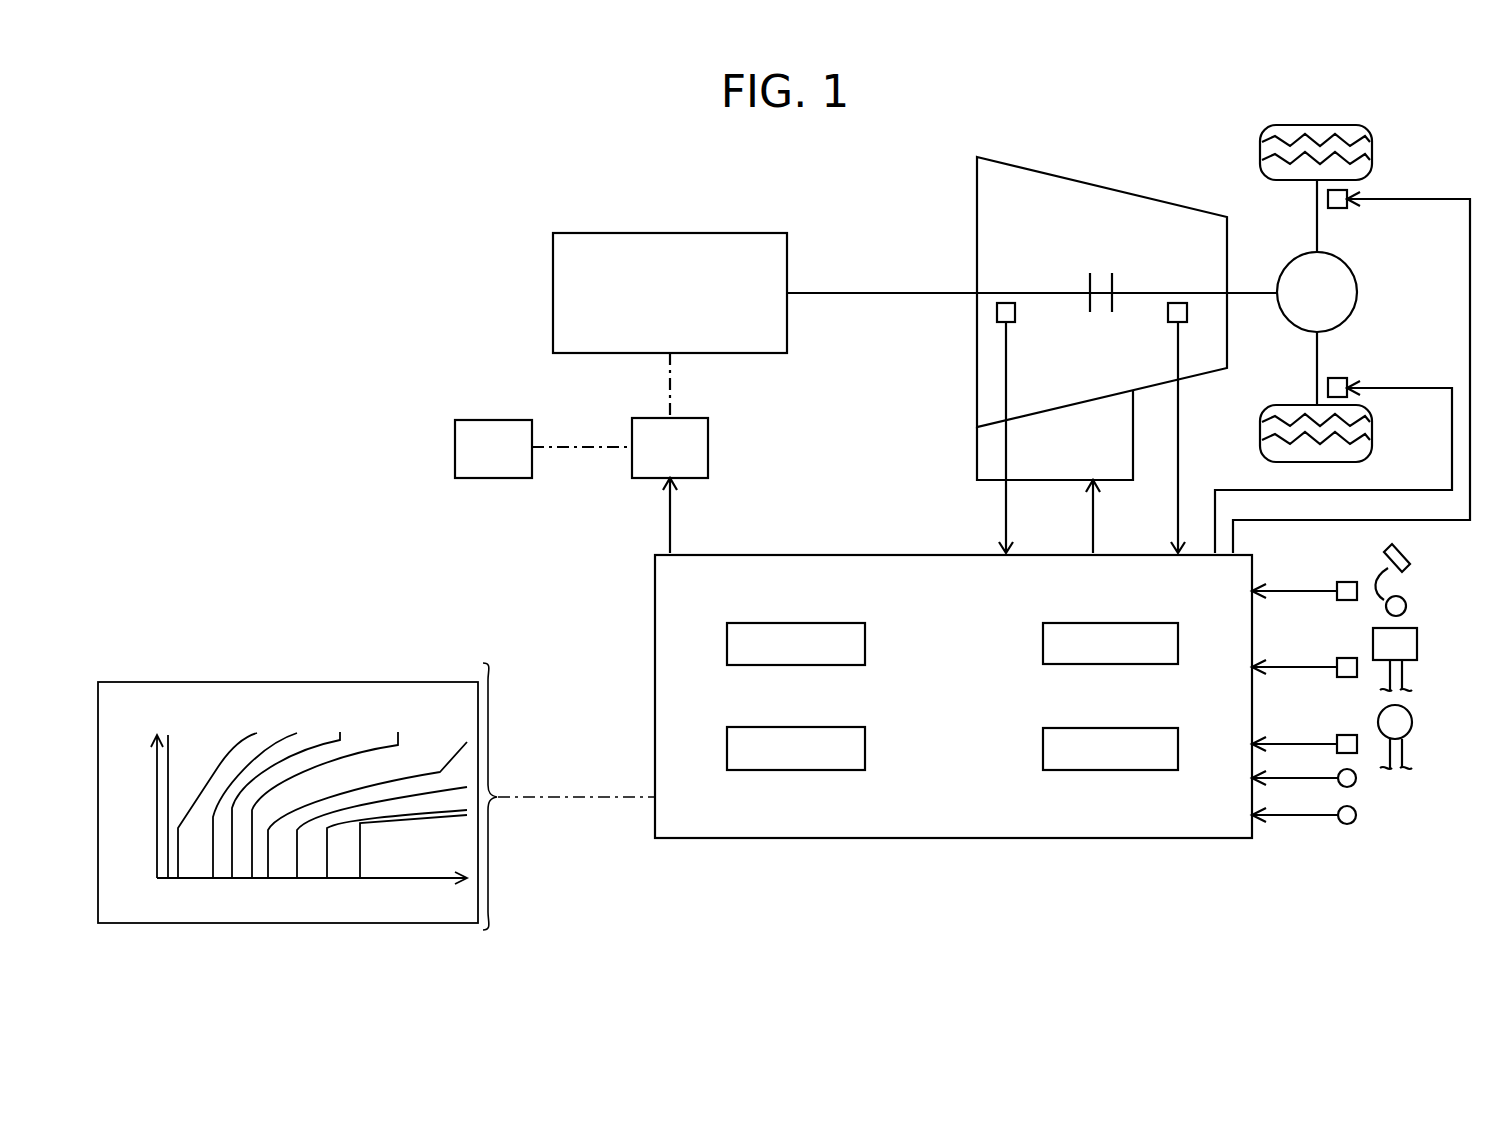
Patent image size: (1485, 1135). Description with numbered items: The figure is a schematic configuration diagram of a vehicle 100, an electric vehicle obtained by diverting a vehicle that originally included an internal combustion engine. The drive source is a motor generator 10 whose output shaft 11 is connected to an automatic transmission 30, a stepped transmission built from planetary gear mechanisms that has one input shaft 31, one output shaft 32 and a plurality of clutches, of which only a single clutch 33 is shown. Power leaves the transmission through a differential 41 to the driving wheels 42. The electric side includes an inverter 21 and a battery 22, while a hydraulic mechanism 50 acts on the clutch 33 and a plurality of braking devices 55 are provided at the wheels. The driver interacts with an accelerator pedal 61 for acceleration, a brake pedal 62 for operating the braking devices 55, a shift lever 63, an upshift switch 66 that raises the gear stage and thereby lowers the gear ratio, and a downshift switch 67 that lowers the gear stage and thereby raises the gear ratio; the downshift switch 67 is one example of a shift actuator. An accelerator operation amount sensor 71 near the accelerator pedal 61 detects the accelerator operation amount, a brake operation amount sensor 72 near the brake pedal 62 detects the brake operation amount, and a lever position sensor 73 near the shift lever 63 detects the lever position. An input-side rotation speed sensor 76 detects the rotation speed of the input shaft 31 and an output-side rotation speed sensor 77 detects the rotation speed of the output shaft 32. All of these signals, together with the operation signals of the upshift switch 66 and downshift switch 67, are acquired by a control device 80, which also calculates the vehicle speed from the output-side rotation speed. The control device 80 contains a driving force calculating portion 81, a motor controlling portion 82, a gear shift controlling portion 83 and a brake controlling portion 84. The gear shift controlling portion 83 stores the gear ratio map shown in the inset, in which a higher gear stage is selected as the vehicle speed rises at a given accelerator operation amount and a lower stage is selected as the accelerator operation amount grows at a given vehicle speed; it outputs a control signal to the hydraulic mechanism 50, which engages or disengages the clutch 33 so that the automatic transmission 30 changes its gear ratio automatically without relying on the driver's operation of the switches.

The vehicle 100 is at (245, 169).
The motor generator 10 is at (672, 232).
The output shaft 11 is at (801, 290).
The inverter 21 is at (710, 447).
The battery 22 is at (452, 447).
The automatic transmission 30 is at (1045, 175).
The input shaft 31 is at (1027, 290).
The output shaft 32 is at (1181, 290).
The clutch 33 is at (1109, 268).
The differential 41 is at (1355, 268).
The driving wheel 42 is at (1374, 150).
The hydraulic mechanism 50 is at (977, 450).
The braking device 55 is at (1338, 210).
The accelerator pedal 61 is at (1408, 548).
The brake pedal 62 is at (1418, 644).
The shift lever 63 is at (1413, 720).
The upshift switch 66 is at (1357, 780).
The downshift switch 67 is at (1357, 817).
The accelerator operation amount sensor 71 is at (1346, 580).
The brake operation amount sensor 72 is at (1346, 656).
The lever position sensor 73 is at (1346, 733).
The input-side rotation speed sensor 76 is at (1015, 312).
The output-side rotation speed sensor 77 is at (1168, 312).
The control device 80 is at (953, 728).
The driving force calculating portion 81 is at (866, 641).
The motor controlling portion 82 is at (1179, 641).
The gear shift controlling portion 83 is at (866, 746).
The brake controlling portion 84 is at (1179, 746).